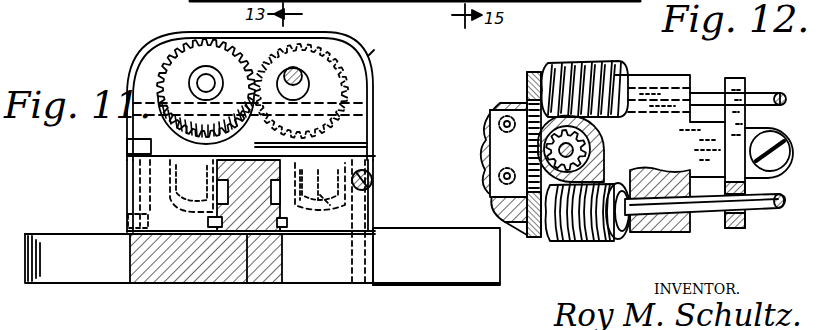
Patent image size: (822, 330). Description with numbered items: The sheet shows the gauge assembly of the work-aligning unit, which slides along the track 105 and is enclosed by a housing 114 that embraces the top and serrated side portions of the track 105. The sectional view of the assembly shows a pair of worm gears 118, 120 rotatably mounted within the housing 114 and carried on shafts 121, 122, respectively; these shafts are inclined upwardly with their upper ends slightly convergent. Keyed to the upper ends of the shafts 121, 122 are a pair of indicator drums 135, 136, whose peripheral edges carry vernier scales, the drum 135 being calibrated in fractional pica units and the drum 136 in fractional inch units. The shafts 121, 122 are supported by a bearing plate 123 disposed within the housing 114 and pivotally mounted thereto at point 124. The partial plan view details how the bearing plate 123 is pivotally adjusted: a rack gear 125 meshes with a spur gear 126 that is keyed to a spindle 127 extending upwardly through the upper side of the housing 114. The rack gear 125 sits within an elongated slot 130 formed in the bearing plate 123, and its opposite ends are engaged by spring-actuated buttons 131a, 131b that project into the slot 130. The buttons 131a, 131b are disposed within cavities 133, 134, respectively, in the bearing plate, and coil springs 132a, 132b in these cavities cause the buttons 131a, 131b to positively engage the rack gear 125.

In FIG. 11, the track 105 is at (250, 268).
In FIG. 11, the housing 114 is at (373, 84).
In FIG. 11, the worm gear 118 is at (128, 193).
In FIG. 12, the worm gear 118 is at (596, 238).
In FIG. 11, the worm gear 120 is at (368, 156).
In FIG. 12, the worm gear 120 is at (590, 63).
In FIG. 12, the shaft 121 is at (706, 220).
In FIG. 11, the shaft 122 is at (296, 74).
In FIG. 12, the shaft 122 is at (704, 98).
In FIG. 12, the bearing plate 123 is at (650, 75).
In FIG. 12, the pivot point 124 is at (770, 138).
In FIG. 12, the rack gear 125 is at (482, 140).
In FIG. 12, the spur gear 126 is at (500, 168).
In FIG. 12, the spindle 127 is at (596, 146).
In FIG. 12, the elongated slot 130 is at (488, 200).
In FIG. 12, the spring-actuated button 131a is at (525, 218).
In FIG. 12, the spring-actuated button 131b is at (512, 108).
In FIG. 12, the coil spring 132a is at (544, 234).
In FIG. 12, the coil spring 132b is at (541, 74).
In FIG. 12, the cavity 133 is at (536, 226).
In FIG. 12, the cavity 134 is at (528, 80).
In FIG. 11, the indicator drum 135 is at (180, 72).
In FIG. 11, the indicator drum 136 is at (388, 48).